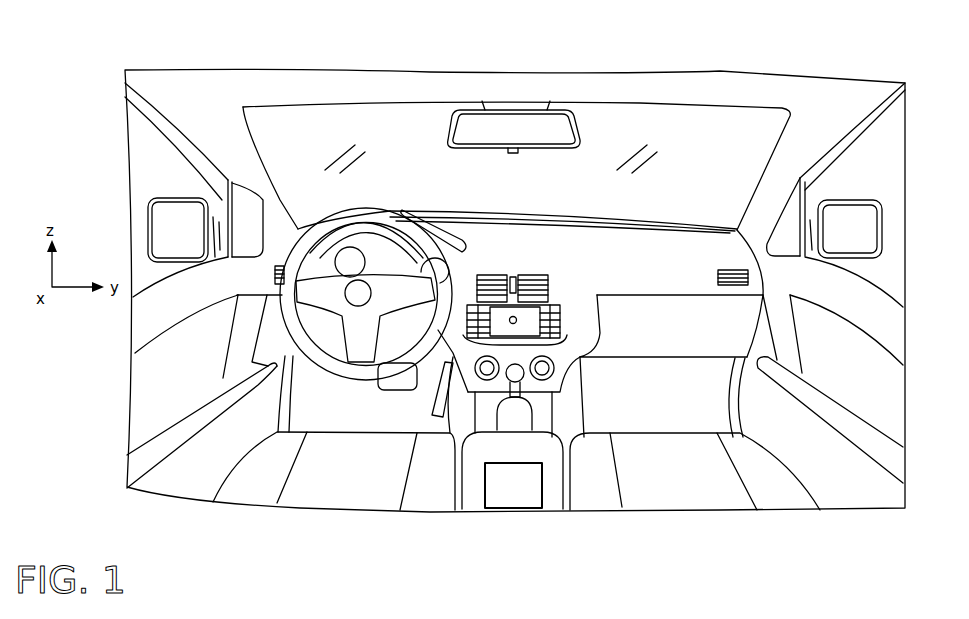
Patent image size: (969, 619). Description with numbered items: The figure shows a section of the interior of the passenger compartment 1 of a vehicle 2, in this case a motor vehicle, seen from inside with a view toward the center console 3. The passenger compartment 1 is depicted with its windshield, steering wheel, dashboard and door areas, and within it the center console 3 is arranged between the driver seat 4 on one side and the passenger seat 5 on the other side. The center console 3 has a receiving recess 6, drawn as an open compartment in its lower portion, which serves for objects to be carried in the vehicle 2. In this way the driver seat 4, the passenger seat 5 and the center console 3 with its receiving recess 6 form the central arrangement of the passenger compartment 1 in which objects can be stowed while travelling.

The passenger compartment 1 is at (219, 110).
The vehicle 2 is at (515, 290).
The center console 3 is at (528, 448).
The driver seat 4 is at (322, 483).
The passenger seat 5 is at (776, 492).
The receiving recess 6 is at (513, 497).